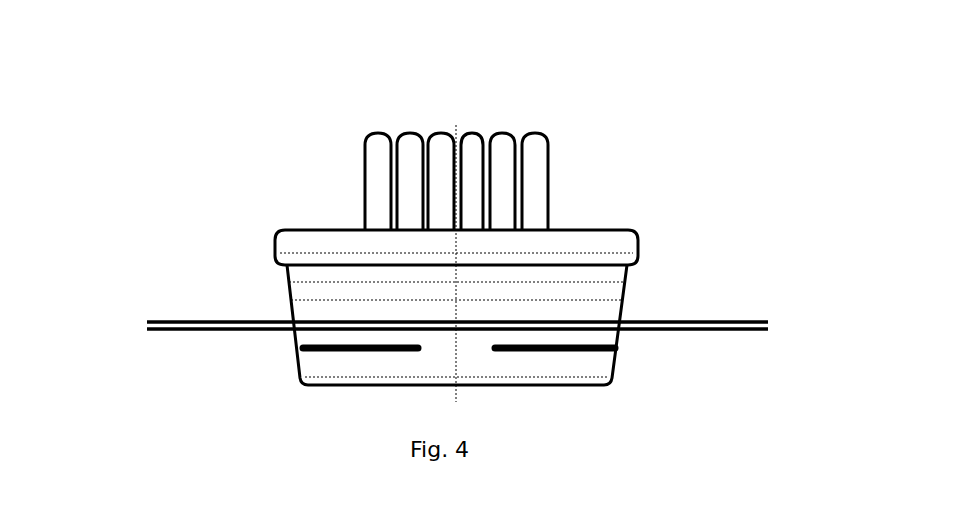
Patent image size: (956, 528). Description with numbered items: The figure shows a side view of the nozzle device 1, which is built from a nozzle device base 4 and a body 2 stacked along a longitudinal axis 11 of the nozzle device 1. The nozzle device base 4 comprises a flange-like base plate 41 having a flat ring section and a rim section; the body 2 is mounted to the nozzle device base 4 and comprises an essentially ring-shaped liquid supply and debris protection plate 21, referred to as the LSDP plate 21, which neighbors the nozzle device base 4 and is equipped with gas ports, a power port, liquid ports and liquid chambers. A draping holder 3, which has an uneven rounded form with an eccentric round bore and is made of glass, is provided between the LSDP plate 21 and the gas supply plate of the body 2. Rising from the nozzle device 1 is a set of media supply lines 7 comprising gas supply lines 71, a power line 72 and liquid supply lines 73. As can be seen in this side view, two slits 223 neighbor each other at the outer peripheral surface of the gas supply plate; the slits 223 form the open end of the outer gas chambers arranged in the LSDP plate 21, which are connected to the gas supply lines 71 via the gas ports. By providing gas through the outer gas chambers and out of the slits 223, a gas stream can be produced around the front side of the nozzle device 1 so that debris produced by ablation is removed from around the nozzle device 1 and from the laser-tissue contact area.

The nozzle device 1 is at (228, 193).
The body 2 is at (260, 297).
The draping holder 3 is at (173, 322).
The nozzle device base 4 is at (260, 247).
The media supply lines 7 is at (568, 155).
The longitudinal axis 11 is at (600, 386).
The liquid supply and debris protection plate 21 is at (610, 291).
The base plate 41 is at (623, 240).
The gas supply lines 71 is at (532, 150).
The power line 72 is at (473, 157).
The liquid supply lines 73 is at (377, 157).
The slits 223 is at (612, 347).